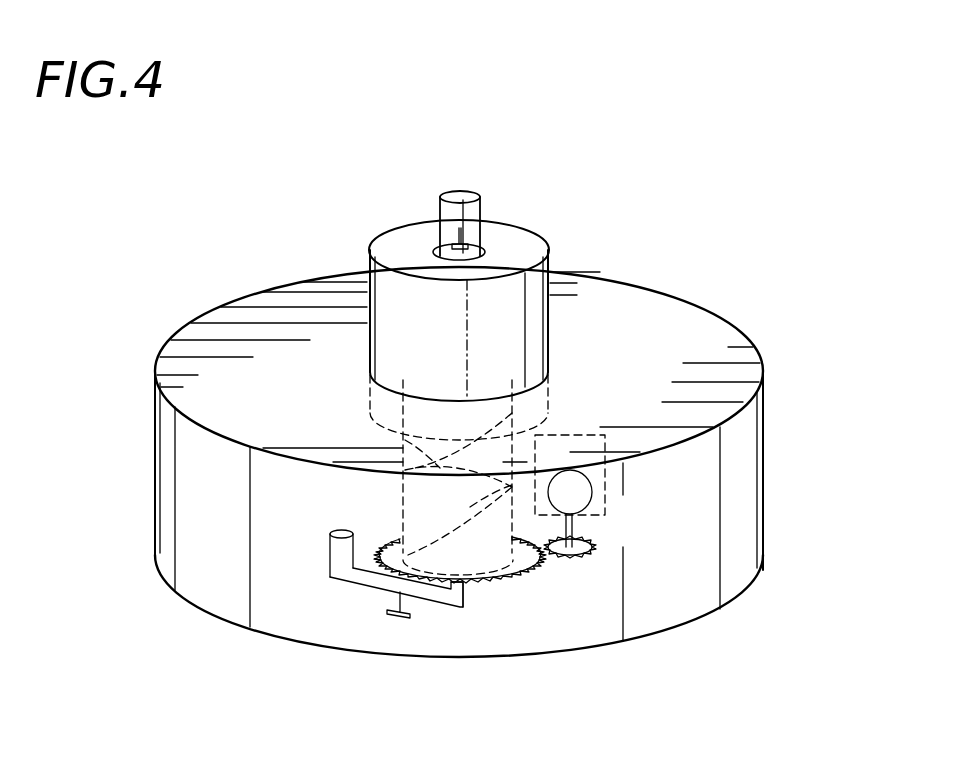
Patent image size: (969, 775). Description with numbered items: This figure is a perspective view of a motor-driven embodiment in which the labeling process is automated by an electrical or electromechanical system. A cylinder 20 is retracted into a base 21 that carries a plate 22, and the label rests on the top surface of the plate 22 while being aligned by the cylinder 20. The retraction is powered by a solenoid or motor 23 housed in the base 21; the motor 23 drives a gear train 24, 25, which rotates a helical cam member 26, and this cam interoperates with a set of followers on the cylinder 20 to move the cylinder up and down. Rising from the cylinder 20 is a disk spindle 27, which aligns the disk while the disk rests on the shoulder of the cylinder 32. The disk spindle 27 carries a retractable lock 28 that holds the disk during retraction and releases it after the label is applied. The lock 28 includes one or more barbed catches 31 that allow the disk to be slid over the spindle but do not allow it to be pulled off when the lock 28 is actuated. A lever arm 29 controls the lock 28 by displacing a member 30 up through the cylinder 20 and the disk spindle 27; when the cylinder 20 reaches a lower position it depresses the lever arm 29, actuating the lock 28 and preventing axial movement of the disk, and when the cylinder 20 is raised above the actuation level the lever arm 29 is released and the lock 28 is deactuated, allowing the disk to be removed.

The cylinder 20 is at (553, 247).
The base 21 is at (766, 466).
The plate 22 is at (703, 325).
The motor 23 is at (596, 421).
The gear train 24 is at (597, 528).
The gear train 25 is at (537, 567).
The helical cam member 26 is at (403, 443).
The disk spindle 27 is at (477, 208).
The retractable lock 28 is at (432, 231).
The lever arm 29 is at (433, 600).
The member 30 is at (463, 587).
The barbed catches 31 is at (420, 246).
The shoulder of the cylinder 32 is at (400, 231).